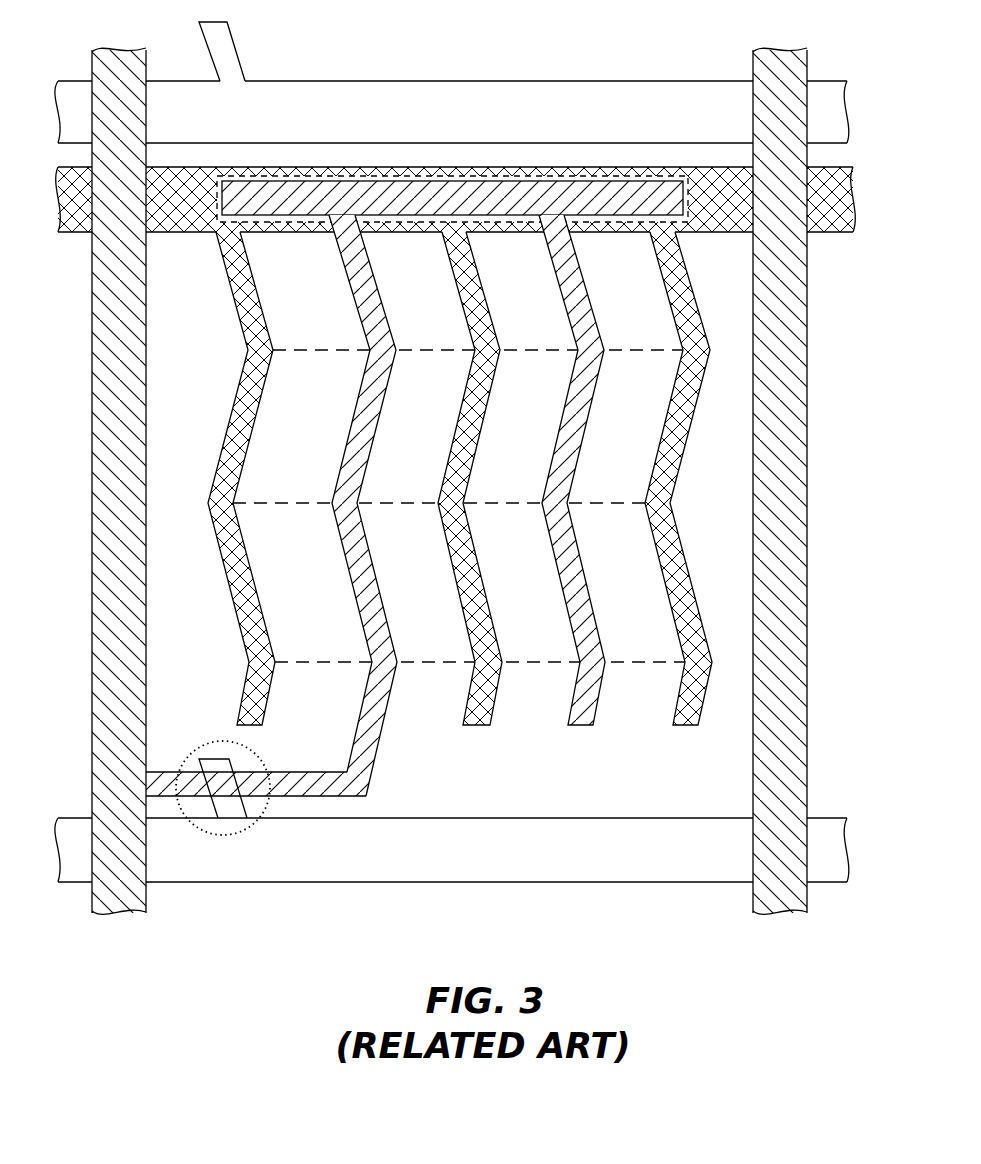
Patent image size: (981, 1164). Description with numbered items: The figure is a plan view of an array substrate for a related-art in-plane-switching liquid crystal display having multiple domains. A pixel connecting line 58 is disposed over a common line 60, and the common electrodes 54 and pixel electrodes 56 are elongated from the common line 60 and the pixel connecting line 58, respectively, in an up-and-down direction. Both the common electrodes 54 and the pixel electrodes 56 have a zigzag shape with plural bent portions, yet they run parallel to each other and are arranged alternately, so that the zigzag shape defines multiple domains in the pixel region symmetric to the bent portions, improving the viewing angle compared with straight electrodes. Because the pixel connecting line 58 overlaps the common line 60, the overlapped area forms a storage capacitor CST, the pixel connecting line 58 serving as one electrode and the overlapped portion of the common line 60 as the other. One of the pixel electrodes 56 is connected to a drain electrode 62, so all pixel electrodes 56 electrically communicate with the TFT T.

The common electrode 54 is at (243, 453).
The pixel electrode 56 is at (361, 458).
The pixel connecting line 58 is at (506, 180).
The common line 60 is at (853, 196).
The drain electrode 62 is at (326, 798).
The TFT T is at (223, 836).
The storage capacitor CST is at (603, 176).